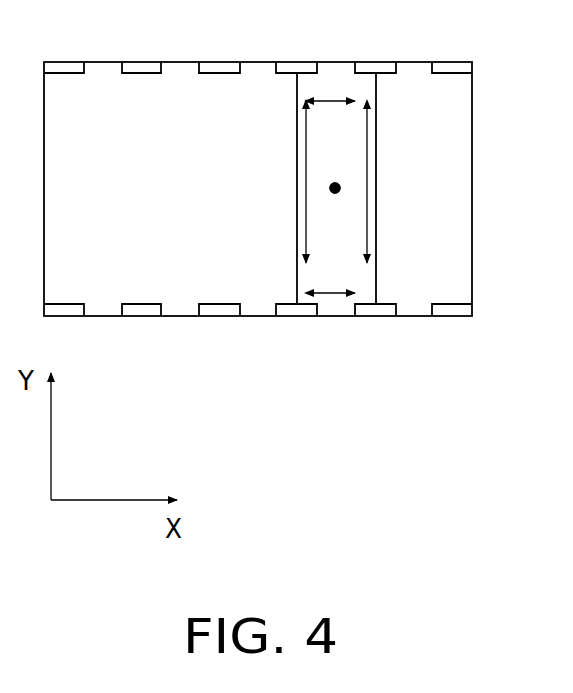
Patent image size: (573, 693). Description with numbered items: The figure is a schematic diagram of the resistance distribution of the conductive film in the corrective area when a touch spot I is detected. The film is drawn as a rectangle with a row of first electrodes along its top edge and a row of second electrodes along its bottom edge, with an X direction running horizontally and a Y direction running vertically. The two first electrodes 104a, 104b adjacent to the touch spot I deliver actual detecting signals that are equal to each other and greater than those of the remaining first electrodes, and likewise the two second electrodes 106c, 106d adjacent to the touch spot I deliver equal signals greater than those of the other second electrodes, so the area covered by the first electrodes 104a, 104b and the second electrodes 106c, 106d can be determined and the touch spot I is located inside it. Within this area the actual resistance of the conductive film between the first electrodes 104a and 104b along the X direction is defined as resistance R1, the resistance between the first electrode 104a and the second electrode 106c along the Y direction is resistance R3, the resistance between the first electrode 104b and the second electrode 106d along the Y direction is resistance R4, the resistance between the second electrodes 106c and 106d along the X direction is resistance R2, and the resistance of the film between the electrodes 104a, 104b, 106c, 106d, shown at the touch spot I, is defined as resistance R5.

The first electrode 104a is at (303, 50).
The first electrode 104b is at (380, 50).
The second electrode 106c is at (294, 330).
The second electrode 106d is at (376, 330).
The resistance R1 is at (334, 85).
The resistance R2 is at (334, 277).
The resistance R3 is at (318, 185).
The resistance R4 is at (354, 185).
The resistance R5 is at (336, 205).
The touch spot I is at (335, 188).